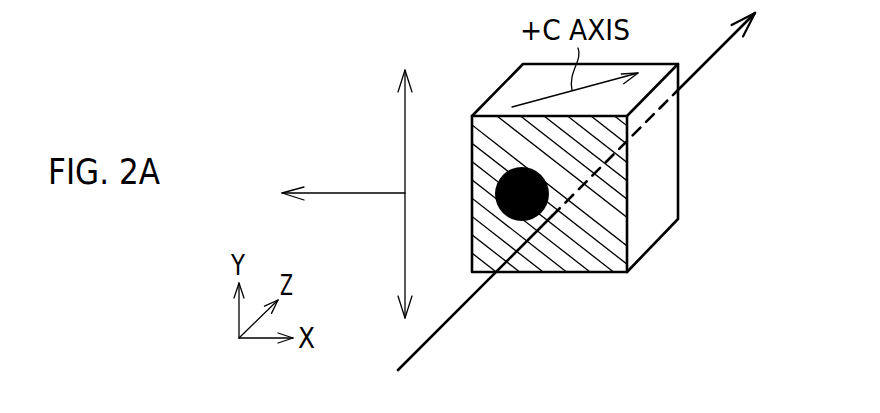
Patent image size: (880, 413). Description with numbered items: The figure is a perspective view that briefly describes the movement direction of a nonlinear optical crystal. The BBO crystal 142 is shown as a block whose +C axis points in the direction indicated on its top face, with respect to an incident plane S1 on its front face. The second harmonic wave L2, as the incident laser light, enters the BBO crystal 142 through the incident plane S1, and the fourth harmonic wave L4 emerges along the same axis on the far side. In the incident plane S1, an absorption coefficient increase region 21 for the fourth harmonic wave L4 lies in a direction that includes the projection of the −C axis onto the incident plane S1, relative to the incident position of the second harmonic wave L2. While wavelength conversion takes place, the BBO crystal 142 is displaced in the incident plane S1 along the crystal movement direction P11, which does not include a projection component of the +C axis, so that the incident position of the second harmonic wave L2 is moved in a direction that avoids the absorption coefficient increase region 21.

The absorption coefficient increase region 21 is at (498, 168).
The BBO crystal 142 is at (680, 160).
The incident plane S1 is at (608, 243).
The second harmonic wave L2 is at (447, 328).
The fourth harmonic wave L4 is at (715, 60).
The crystal movement direction P11 is at (310, 172).